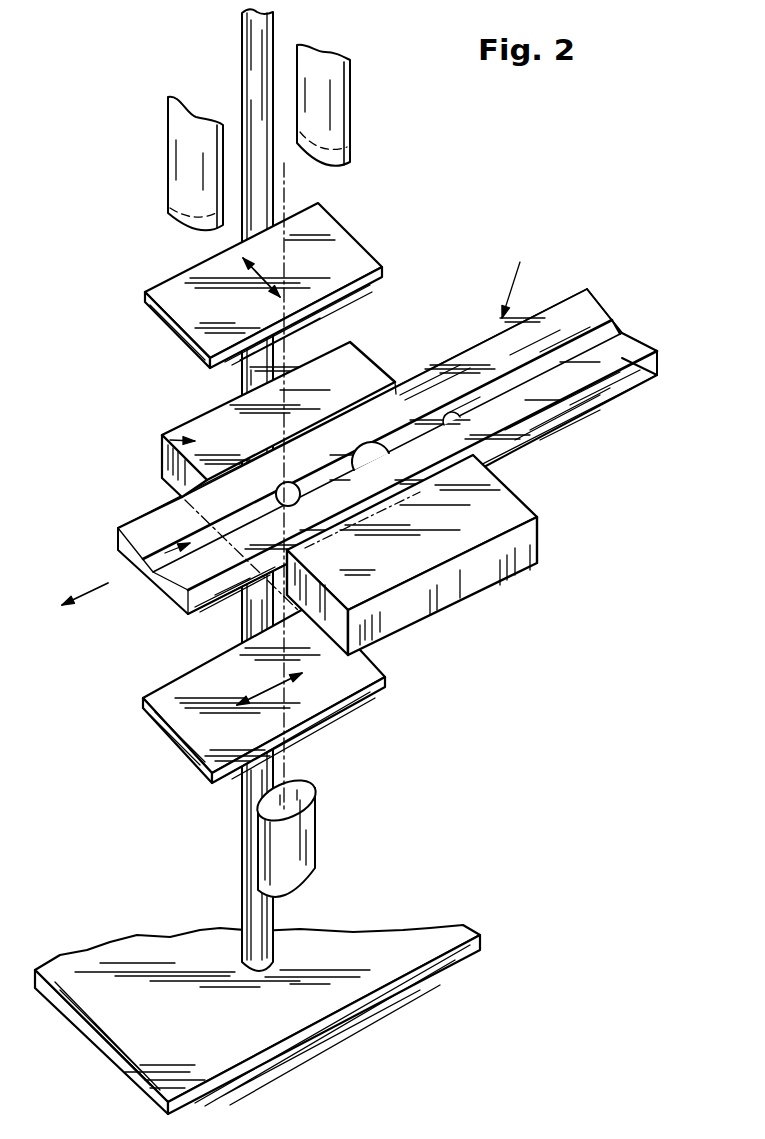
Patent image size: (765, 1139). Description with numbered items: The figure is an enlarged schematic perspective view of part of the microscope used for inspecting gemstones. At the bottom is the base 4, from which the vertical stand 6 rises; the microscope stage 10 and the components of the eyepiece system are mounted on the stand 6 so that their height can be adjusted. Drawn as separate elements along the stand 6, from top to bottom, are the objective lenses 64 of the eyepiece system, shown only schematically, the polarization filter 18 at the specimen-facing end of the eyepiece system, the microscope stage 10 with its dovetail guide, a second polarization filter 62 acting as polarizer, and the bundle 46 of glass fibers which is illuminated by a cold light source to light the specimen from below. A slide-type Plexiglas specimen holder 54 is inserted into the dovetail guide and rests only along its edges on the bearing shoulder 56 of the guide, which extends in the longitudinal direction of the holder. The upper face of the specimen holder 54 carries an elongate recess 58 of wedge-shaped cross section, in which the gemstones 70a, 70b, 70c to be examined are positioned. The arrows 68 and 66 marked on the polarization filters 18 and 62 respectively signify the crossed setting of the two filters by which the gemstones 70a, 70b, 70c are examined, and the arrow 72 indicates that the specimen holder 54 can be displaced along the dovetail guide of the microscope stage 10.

The base 4 is at (390, 940).
The stand 6 is at (252, 38).
The microscope stage 10 is at (162, 435).
The polarization filter 18 is at (192, 308).
The bundle of glass fibers 46 is at (295, 867).
The specimen holder 54 is at (382, 394).
The bearing shoulder 56 is at (285, 580).
The elongate recess 58 is at (118, 528).
The second polarization filter 62 is at (353, 678).
The objective lenses 64 is at (173, 205).
The arrow 66 is at (327, 703).
The arrow 68 is at (268, 283).
The gemstone 70a is at (285, 492).
The gemstone 70b is at (381, 432).
The gemstone 70c is at (453, 421).
The arrow 72 is at (69, 606).